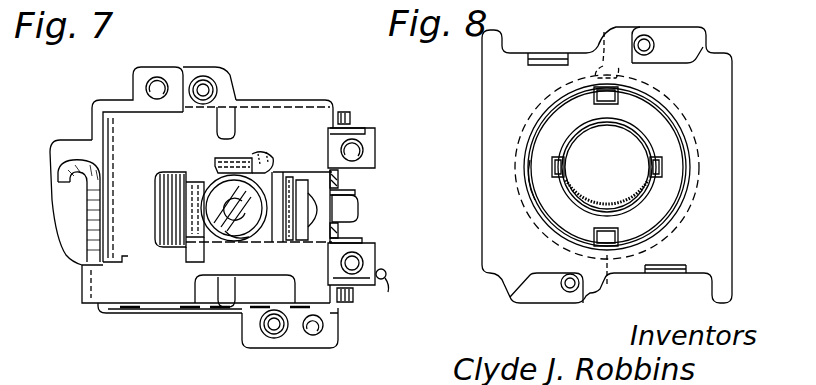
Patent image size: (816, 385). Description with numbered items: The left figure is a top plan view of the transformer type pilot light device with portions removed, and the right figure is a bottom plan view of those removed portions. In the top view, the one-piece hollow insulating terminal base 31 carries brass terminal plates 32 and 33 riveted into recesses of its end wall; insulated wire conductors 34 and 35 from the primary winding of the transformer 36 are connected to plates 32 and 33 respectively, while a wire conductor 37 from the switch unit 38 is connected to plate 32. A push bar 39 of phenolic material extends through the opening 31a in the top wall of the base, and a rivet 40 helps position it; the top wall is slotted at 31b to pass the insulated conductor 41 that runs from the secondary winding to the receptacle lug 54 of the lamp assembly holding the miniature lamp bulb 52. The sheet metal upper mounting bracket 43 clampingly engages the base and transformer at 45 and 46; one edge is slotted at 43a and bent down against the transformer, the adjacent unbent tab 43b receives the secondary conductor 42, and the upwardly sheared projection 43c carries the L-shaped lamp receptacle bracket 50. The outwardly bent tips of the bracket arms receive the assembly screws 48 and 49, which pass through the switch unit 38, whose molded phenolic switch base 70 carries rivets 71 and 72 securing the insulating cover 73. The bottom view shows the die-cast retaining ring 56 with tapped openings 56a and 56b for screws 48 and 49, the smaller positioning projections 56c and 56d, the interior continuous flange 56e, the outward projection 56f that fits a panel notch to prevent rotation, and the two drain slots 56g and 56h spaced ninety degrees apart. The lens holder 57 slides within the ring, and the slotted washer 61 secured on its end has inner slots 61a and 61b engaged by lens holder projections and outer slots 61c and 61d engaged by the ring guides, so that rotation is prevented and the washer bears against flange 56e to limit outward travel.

In FIG. 7, the terminal base 31 is at (358, 210).
In FIG. 7, the opening 31a is at (356, 193).
In FIG. 7, the slot 31b is at (285, 160).
In FIG. 7, the terminal plate 32 is at (374, 259).
In FIG. 7, the terminal plate 33 is at (374, 143).
In FIG. 7, the insulated wire conductor 34 is at (340, 239).
In FIG. 7, the insulated wire conductor 35 is at (336, 186).
In FIG. 7, the transformer 36 is at (60, 186).
In FIG. 7, the wire conductor 37 is at (388, 288).
In FIG. 7, the switch unit 38 is at (166, 318).
In FIG. 7, the push bar 39 is at (340, 228).
In FIG. 7, the rivet 40 is at (290, 242).
In FIG. 7, the insulated wire conductor 41 is at (258, 156).
In FIG. 7, the secondary conductor 42 is at (88, 207).
In FIG. 7, the upper mounting bracket 43 is at (134, 190).
In FIG. 7, the slot 43a is at (127, 260).
In FIG. 7, the tab 43b is at (80, 285).
In FIG. 7, the upwardly sheared projection 43c is at (192, 252).
In FIG. 7, the clamping engagement 45 is at (228, 296).
In FIG. 7, the clamping engagement 46 is at (229, 112).
In FIG. 7, the assembly screw 48 is at (275, 335).
In FIG. 7, the assembly screw 49 is at (203, 76).
In FIG. 7, the lamp receptacle bracket 50 is at (205, 182).
In FIG. 7, the lamp bulb 52 is at (228, 229).
In FIG. 7, the receptacle lug 54 is at (240, 158).
In FIG. 8, the retaining ring 56 is at (740, 75).
In FIG. 8, the tapped opening 56a is at (566, 290).
In FIG. 8, the tapped opening 56b is at (648, 42).
In FIG. 8, the integral projection 56c is at (666, 274).
In FIG. 8, the integral projection 56d is at (550, 54).
In FIG. 8, the continuous flange 56e is at (540, 196).
In FIG. 8, the outward projection 56f is at (604, 44).
In FIG. 8, the drain slot 56g is at (700, 156).
In FIG. 8, the drain slot 56h is at (607, 281).
In FIG. 8, the lens holder 57 is at (640, 137).
In FIG. 8, the slotted washer 61 is at (665, 140).
In FIG. 8, the inner slot 61a is at (662, 170).
In FIG. 8, the inner slot 61b is at (553, 163).
In FIG. 8, the outer slot 61c is at (625, 228).
In FIG. 8, the outer slot 61d is at (592, 100).
In FIG. 7, the switch base 70 is at (118, 314).
In FIG. 7, the rivet 71 is at (160, 77).
In FIG. 7, the rivet 72 is at (313, 336).
In FIG. 7, the insulating cover 73 is at (110, 104).